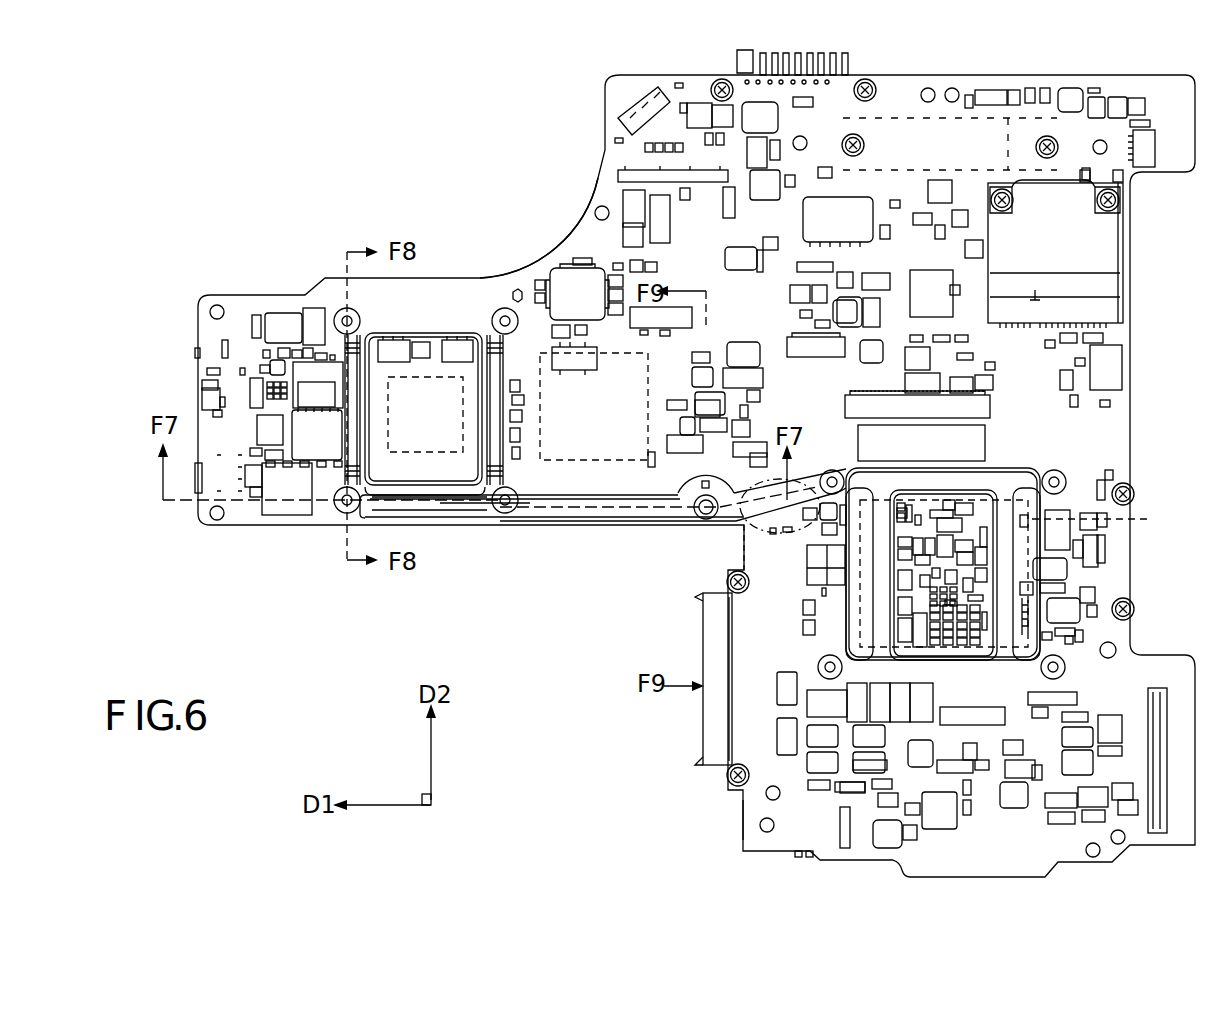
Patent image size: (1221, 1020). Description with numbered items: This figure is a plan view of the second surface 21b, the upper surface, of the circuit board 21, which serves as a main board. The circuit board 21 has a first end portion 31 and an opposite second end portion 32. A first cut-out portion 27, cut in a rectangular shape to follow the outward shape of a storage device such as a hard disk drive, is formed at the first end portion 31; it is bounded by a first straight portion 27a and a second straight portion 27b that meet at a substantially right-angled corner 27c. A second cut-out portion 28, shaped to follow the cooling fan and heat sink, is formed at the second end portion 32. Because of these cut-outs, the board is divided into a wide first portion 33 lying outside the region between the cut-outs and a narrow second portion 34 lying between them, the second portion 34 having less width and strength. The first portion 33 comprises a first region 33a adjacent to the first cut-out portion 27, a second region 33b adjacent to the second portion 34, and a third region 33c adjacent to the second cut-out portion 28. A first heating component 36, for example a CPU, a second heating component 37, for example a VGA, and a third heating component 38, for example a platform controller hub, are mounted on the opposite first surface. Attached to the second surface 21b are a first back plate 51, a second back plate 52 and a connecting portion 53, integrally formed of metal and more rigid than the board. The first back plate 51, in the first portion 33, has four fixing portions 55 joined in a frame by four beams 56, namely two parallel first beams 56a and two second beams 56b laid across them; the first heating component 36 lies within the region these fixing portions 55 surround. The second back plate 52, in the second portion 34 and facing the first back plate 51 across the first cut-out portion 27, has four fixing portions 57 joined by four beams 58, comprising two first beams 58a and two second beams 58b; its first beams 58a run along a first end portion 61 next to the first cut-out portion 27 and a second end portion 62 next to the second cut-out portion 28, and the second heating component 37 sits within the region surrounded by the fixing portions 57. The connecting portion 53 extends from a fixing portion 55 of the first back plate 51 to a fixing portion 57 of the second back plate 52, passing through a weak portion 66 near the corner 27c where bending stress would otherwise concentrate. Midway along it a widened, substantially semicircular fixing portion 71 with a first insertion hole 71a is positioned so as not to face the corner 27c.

The circuit board 21 is at (1000, 118).
The second surface 21b is at (950, 144).
The first cut-out portion 27 is at (534, 526).
The first straight portion 27a is at (437, 528).
The second straight portion 27b is at (743, 823).
The corner 27c is at (745, 527).
The second cut-out portion 28 is at (528, 262).
The first end portion 31 is at (1000, 867).
The second end portion 32 is at (918, 96).
The first portion 33 is at (1102, 451).
The first region 33a is at (798, 840).
The second region 33b is at (1093, 402).
The third region 33c is at (835, 104).
The second portion 34 is at (208, 350).
The first heating component 36 is at (1106, 525).
The second heating component 37 is at (427, 368).
The third heating component 38 is at (612, 352).
The first back plate 51 is at (1008, 484).
The second back plate 52 is at (466, 320).
The connecting portion 53 is at (608, 513).
The fixing portion 55 is at (824, 471).
The beam 56 is at (930, 484).
The first beam 56a is at (898, 484).
The second beam 56b is at (1002, 612).
The fixing portion 57 is at (338, 308).
The beam 58 is at (400, 312).
The first beam 58a is at (372, 318).
The second beam 58b is at (353, 433).
The first end portion 61 is at (456, 516).
The second end portion 62 is at (457, 300).
The weak portion 66 is at (760, 530).
The fixing portion 71 is at (683, 490).
The first insertion hole 71a is at (710, 505).